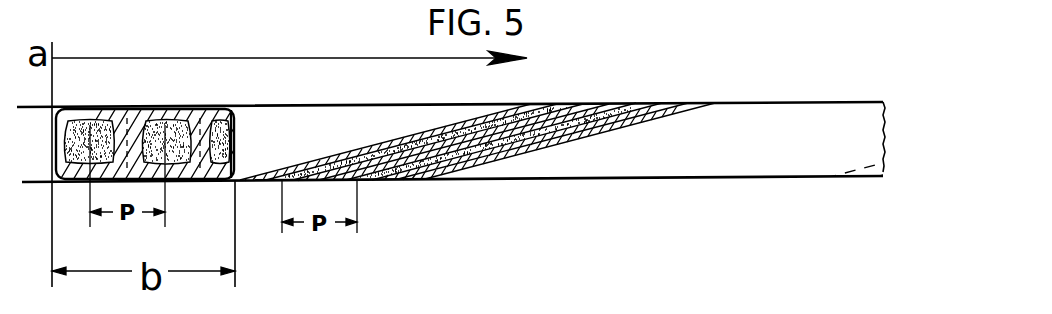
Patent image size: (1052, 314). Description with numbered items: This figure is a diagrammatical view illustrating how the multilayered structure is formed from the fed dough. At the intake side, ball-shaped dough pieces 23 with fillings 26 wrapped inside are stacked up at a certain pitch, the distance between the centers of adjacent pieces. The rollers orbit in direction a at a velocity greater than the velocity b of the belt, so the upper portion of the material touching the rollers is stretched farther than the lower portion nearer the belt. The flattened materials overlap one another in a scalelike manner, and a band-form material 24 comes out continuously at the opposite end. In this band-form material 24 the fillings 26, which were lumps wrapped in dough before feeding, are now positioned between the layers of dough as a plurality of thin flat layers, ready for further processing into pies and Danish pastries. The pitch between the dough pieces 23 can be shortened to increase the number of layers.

The ball-shaped dough pieces 23 is at (58, 122).
The band-form material 24 is at (695, 85).
The fillings 26 is at (90, 131).